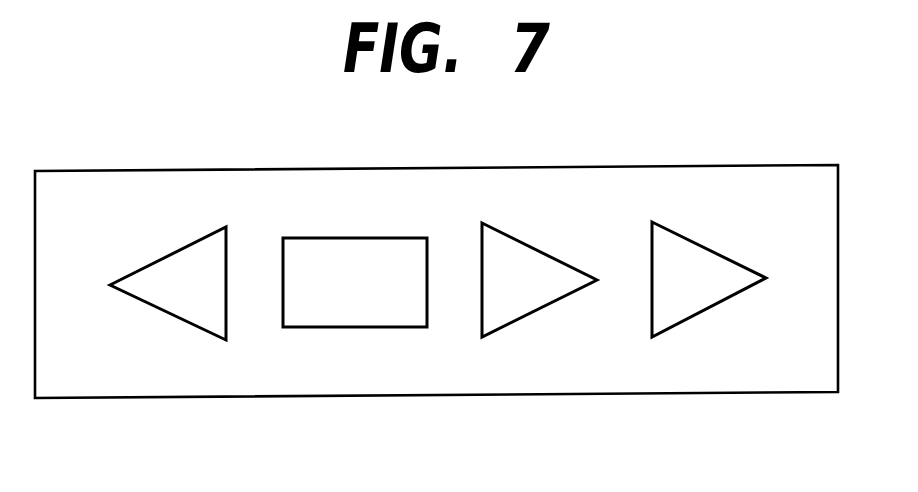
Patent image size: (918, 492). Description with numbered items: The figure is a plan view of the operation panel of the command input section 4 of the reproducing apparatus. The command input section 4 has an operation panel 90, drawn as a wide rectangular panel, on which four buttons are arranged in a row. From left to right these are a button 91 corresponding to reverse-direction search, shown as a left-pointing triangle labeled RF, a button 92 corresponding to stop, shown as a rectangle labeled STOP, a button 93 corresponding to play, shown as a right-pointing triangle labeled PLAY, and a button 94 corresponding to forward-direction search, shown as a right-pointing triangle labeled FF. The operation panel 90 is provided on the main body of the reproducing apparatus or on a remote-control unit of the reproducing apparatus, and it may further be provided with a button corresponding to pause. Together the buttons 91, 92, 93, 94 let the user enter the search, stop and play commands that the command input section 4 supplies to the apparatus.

The command input section 4 is at (664, 130).
The operation panel 90 is at (771, 166).
The button 91 is at (172, 251).
The button 92 is at (383, 237).
The button 93 is at (545, 251).
The button 94 is at (720, 253).